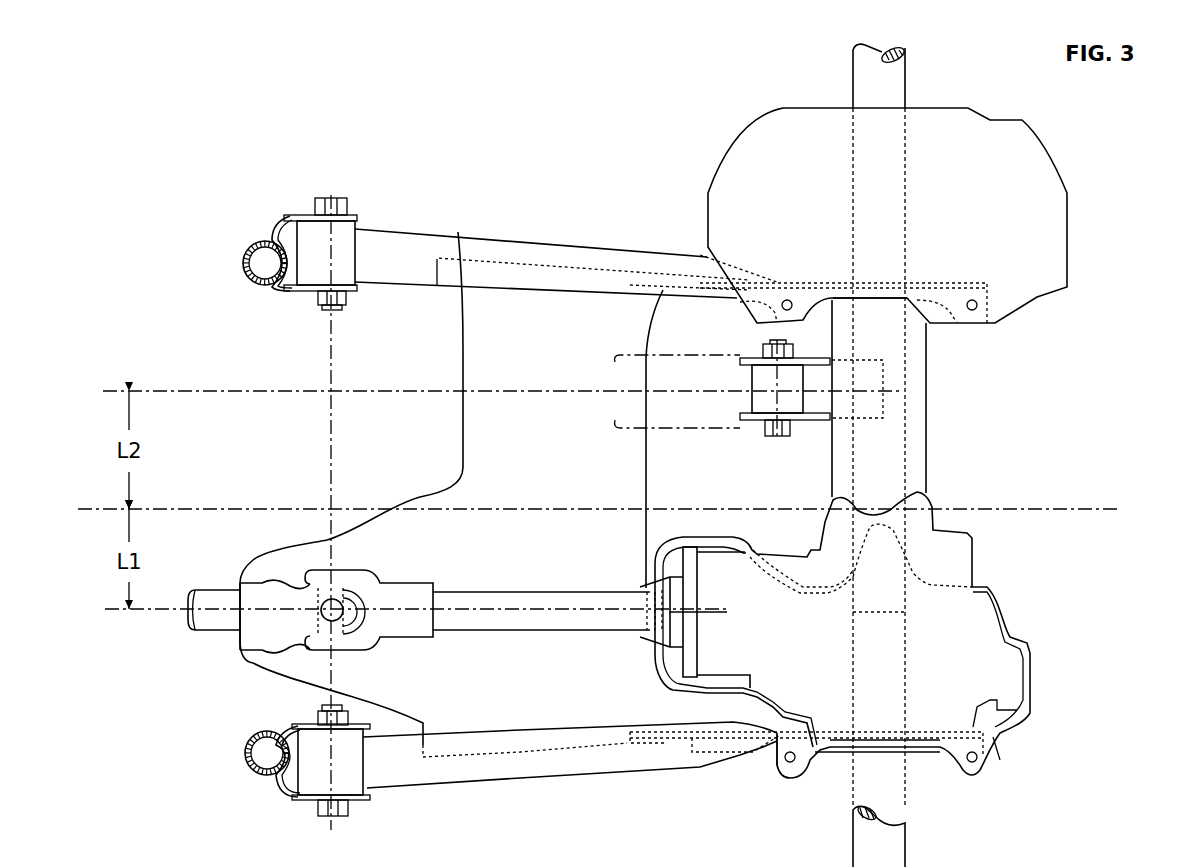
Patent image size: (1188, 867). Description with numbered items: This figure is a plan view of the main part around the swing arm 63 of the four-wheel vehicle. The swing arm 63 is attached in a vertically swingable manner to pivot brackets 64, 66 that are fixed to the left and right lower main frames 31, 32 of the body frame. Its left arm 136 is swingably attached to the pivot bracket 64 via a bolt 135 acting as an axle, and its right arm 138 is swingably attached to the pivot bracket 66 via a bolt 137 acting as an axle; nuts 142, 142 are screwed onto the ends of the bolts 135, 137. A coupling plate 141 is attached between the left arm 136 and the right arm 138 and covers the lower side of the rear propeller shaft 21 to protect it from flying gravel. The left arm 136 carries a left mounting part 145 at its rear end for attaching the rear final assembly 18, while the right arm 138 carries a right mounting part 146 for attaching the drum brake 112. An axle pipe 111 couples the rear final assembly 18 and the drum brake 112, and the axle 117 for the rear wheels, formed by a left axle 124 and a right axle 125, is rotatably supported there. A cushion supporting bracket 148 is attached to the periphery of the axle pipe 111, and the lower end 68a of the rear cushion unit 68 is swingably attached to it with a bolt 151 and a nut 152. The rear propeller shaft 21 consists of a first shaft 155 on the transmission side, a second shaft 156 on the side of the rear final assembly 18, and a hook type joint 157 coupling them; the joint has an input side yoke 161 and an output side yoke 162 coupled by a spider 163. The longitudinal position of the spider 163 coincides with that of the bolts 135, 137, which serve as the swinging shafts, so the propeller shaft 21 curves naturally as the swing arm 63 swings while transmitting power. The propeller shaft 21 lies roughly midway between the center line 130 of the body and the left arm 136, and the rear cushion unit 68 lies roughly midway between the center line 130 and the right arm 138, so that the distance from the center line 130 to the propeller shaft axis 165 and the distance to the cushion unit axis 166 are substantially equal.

The rear final assembly 18 is at (987, 680).
The rear propeller shaft 21 is at (588, 624).
The lower main frame 31 is at (245, 748).
The lower main frame 32 is at (243, 258).
The swing arm 63 is at (458, 230).
The pivot bracket 64 is at (290, 792).
The pivot bracket 66 is at (283, 222).
The rear cushion unit 68 is at (697, 350).
The lower end 68a is at (767, 410).
The axle pipe 111 is at (924, 440).
The drum brake 112 is at (1038, 168).
The axle 117 is at (845, 88).
The left axle 124 is at (912, 812).
The right axle 125 is at (897, 77).
The center line of the body 130 is at (91, 509).
The bolt 135 is at (350, 810).
The left arm 136 is at (570, 763).
The bolt 137 is at (345, 201).
The right arm 138 is at (512, 250).
The coupling plate 141 is at (579, 320).
The nut 142 is at (312, 302).
The left mounting part 145 is at (833, 760).
The right mounting part 146 is at (990, 305).
The cushion supporting bracket 148 is at (820, 360).
The bolt 151 is at (777, 438).
The nut 152 is at (765, 348).
The first shaft 155 is at (210, 622).
The second shaft 156 is at (495, 625).
The hook type joint 157 is at (423, 648).
The input side yoke 161 is at (262, 590).
The output side yoke 162 is at (363, 582).
The spider 163 is at (326, 600).
The axis of the rear propeller shaft 165 is at (110, 611).
The axis of the rear cushion unit 166 is at (108, 390).